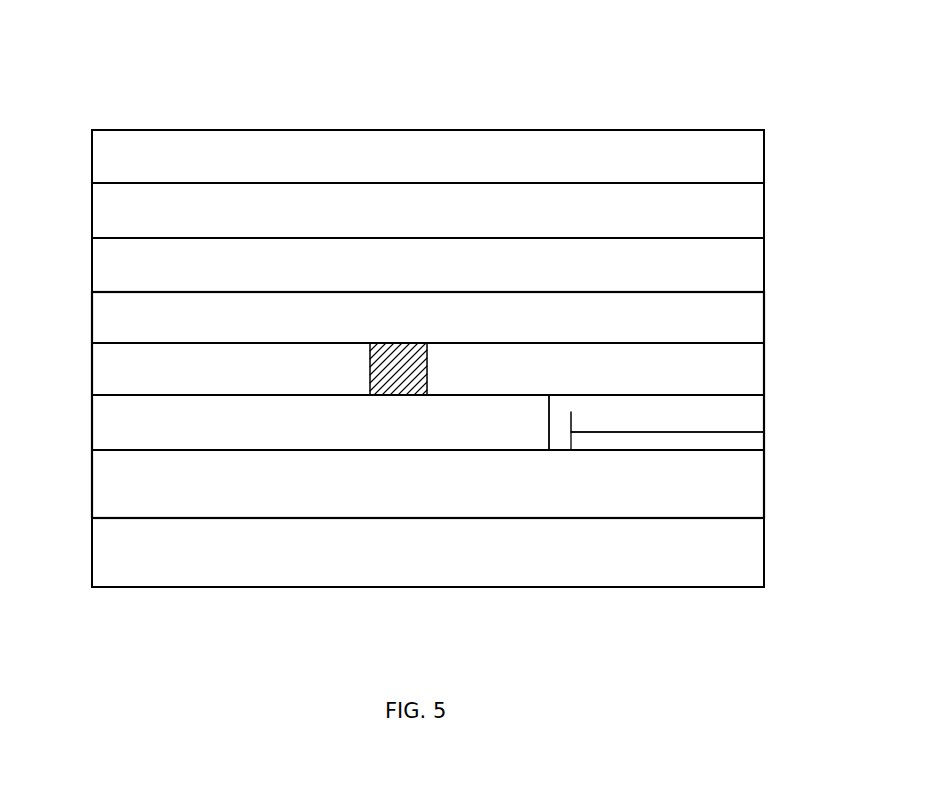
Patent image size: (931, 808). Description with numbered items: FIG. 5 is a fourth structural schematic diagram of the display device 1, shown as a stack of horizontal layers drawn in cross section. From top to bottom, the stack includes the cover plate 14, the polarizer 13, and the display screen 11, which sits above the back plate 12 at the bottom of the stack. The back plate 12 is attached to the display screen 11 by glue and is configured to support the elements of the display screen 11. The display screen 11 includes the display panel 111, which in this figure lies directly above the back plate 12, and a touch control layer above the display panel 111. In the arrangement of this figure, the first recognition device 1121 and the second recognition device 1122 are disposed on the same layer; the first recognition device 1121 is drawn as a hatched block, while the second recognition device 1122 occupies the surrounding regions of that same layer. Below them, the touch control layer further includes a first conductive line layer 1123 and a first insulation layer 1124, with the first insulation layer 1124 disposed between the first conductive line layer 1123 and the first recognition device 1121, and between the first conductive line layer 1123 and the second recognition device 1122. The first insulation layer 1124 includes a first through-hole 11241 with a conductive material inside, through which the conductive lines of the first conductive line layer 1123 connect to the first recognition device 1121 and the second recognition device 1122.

The display device 1 is at (132, 93).
The display screen 11 is at (87, 341).
The back plate 12 is at (733, 568).
The polarizer 13 is at (742, 225).
The cover plate 14 is at (735, 173).
The display panel 111 is at (745, 495).
The first recognition device 1121 is at (395, 372).
The second recognition device 1122 is at (238, 365).
The first conductive line layer 1123 is at (739, 445).
The first insulation layer 1124 is at (742, 412).
The first through-hole 11241 is at (571, 405).